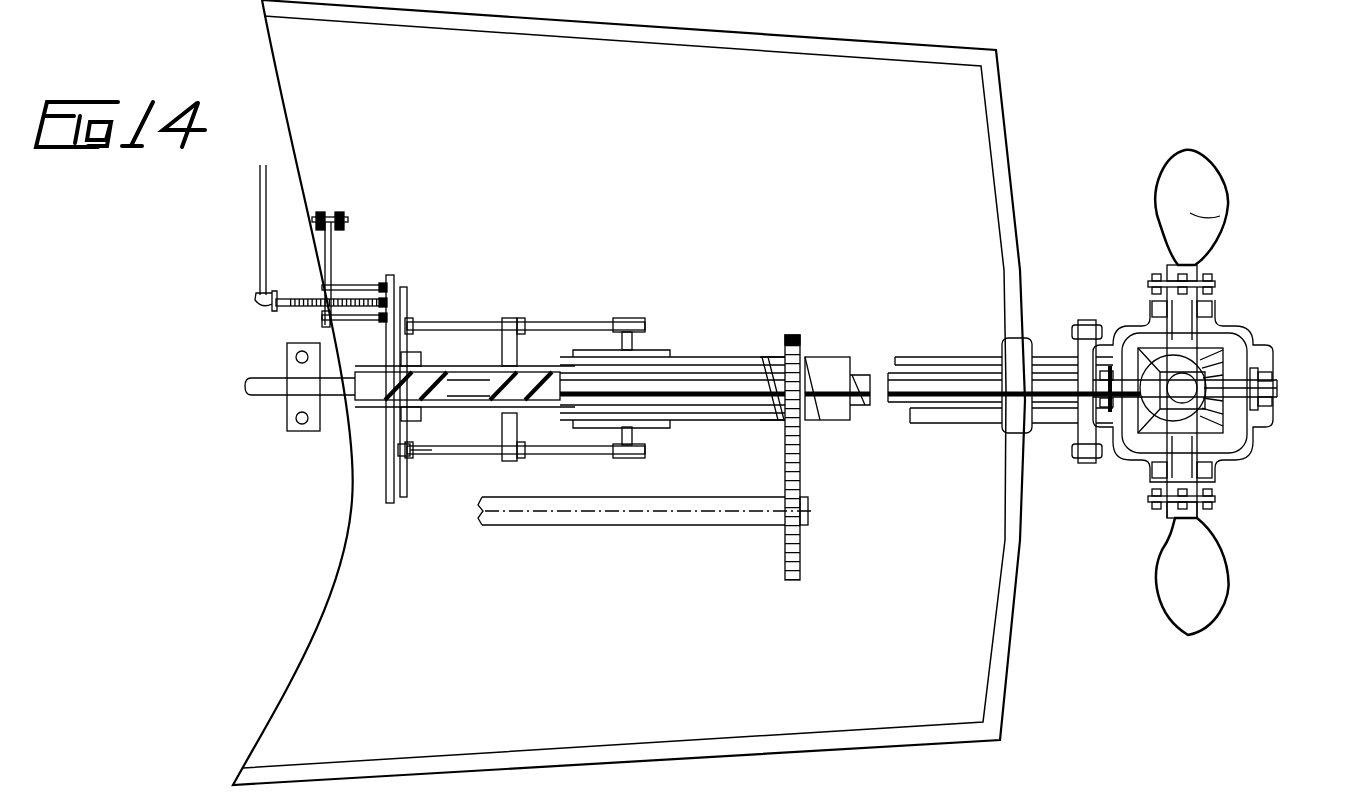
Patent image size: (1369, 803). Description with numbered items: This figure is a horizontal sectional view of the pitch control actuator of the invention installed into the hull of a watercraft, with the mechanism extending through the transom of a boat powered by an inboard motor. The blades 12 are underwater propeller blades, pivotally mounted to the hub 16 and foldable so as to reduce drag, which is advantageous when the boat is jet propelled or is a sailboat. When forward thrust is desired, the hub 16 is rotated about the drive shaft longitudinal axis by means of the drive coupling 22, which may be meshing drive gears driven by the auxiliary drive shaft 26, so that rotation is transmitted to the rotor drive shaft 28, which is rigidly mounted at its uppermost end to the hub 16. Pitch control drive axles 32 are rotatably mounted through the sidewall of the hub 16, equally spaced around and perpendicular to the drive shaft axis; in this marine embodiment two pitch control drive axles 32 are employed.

The blades 12 is at (1230, 212).
The hub 16 is at (1253, 342).
The drive coupling 22 is at (822, 500).
The auxiliary drive shaft 26 is at (757, 520).
The rotor drive shaft 28 is at (778, 372).
The pitch control drive axles 32 is at (1205, 300).